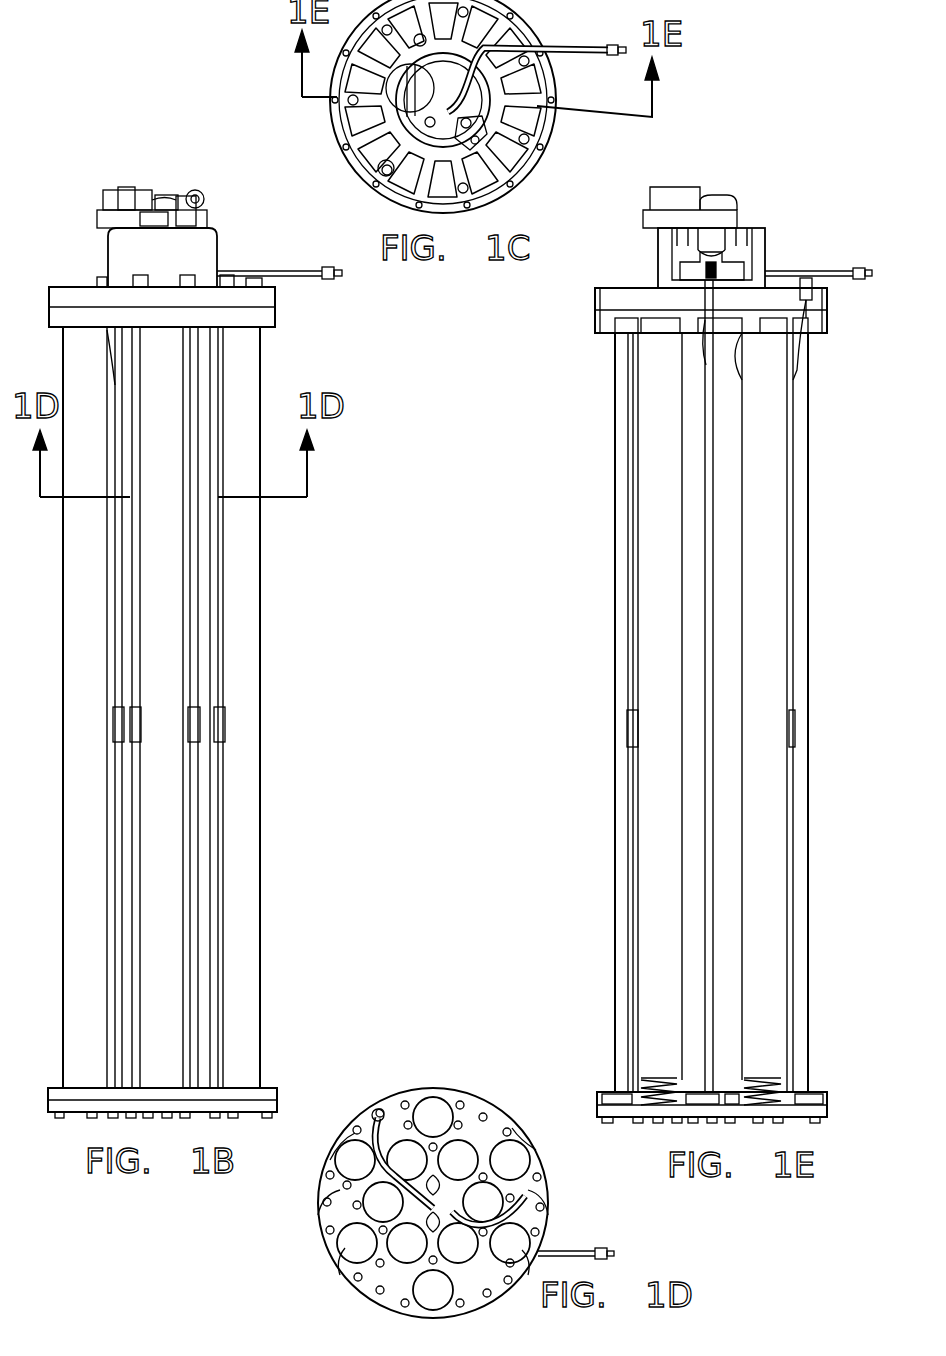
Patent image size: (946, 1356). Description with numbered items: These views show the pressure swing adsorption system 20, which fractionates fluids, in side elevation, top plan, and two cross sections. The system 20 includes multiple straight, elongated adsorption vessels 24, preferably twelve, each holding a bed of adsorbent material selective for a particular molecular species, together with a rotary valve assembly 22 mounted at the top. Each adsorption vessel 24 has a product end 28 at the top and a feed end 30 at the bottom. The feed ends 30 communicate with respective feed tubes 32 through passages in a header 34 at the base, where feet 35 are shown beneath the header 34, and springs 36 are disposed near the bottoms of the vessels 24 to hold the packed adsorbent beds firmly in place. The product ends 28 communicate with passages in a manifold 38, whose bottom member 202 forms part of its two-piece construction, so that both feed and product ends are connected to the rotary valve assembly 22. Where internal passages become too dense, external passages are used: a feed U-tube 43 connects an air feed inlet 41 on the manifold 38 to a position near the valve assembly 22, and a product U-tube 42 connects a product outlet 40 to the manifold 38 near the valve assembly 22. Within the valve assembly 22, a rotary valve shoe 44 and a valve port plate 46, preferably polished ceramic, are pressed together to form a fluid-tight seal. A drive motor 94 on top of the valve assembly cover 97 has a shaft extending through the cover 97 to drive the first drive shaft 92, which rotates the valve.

In FIG. 1B, the pressure swing adsorption system 20 is at (300, 378).
In FIG. 1E, the rotary valve assembly 22 is at (766, 252).
In FIG. 1B, the adsorption vessels 24 is at (260, 880).
In FIG. 1D, the adsorption vessels 24 is at (543, 1168).
In FIG. 1E, the adsorption vessels 24 is at (785, 828).
In FIG. 1E, the product end 28 is at (777, 371).
In FIG. 1E, the feed end 30 is at (777, 1057).
In FIG. 1B, the feed tubes 32 is at (222, 832).
In FIG. 1D, the feed tubes 32 is at (482, 1135).
In FIG. 1E, the feed tubes 32 is at (793, 775).
In FIG. 1B, the header 34 is at (277, 1092).
In FIG. 1E, the header 34 is at (598, 1095).
In FIG. 1B, the feet 35 is at (278, 1115).
In FIG. 1E, the feet 35 is at (597, 1118).
In FIG. 1E, the springs 36 is at (773, 1083).
In FIG. 1B, the manifold 38 is at (283, 287).
In FIG. 1D, the manifold 38 is at (330, 1237).
In FIG. 1E, the manifold 38 is at (593, 280).
In FIG. 1C, the product outlet 40 is at (346, 148).
In FIG. 1C, the air feed inlet 41 is at (512, 107).
In FIG. 1D, the product U-tube 42 is at (388, 1130).
In FIG. 1E, the product U-tube 42 is at (706, 330).
In FIG. 1D, the feed U-tube 43 is at (540, 1250).
In FIG. 1E, the feed U-tube 43 is at (803, 370).
In FIG. 1E, the rotary valve shoe 44 is at (683, 263).
In FIG. 1E, the valve port plate 46 is at (688, 303).
In FIG. 1E, the first drive shaft 92 is at (738, 245).
In FIG. 1B, the drive motor 94 is at (135, 190).
In FIG. 1C, the drive motor 94 is at (340, 118).
In FIG. 1E, the drive motor 94 is at (675, 187).
In FIG. 1B, the valve assembly cover 97 is at (215, 232).
In FIG. 1C, the valve assembly cover 97 is at (520, 120).
In FIG. 1D, the bottom member 202 is at (372, 1126).